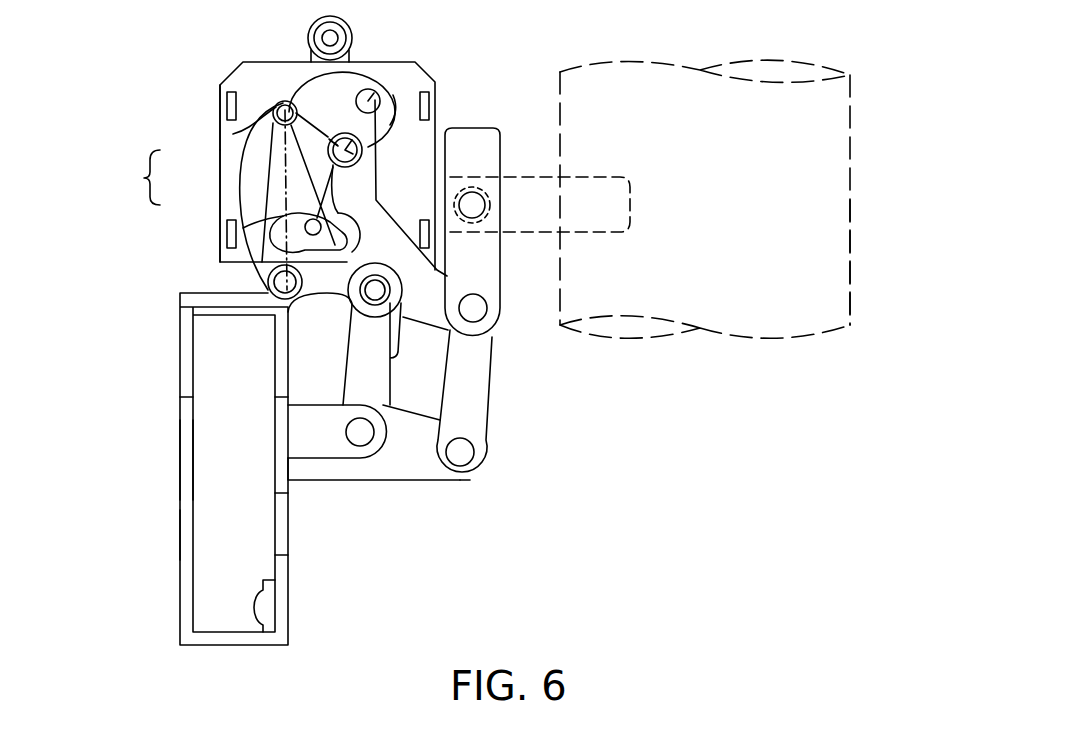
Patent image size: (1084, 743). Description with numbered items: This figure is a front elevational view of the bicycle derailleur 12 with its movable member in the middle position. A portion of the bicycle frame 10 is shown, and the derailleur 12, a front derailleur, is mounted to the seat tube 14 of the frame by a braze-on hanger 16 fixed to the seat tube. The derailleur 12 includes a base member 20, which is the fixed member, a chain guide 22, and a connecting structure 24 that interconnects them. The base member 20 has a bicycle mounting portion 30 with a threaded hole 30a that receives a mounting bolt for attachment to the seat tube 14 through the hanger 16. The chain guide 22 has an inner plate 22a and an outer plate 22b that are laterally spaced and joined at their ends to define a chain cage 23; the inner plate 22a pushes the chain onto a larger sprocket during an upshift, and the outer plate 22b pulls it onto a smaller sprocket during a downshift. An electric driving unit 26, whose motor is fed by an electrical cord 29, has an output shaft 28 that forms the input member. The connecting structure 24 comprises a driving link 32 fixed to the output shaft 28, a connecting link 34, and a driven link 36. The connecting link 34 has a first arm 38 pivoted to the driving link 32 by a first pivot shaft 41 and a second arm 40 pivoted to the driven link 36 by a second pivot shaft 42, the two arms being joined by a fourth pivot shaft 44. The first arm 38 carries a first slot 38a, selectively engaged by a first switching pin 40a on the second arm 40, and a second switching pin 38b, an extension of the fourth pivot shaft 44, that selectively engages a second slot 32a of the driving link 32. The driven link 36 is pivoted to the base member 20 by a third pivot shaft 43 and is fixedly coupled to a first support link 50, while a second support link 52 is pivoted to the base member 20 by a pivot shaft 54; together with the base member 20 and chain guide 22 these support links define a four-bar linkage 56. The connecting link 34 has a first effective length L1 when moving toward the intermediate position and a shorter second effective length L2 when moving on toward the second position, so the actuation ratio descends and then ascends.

The bicycle frame 10 is at (882, 80).
The bicycle derailleur 12 is at (186, 77).
The seat tube 14 is at (851, 277).
The braze-on hanger 16 is at (592, 176).
The base member 20 is at (400, 215).
The chain guide 22 is at (176, 417).
The inner plate 22a is at (288, 591).
The outer plate 22b is at (178, 530).
The chain cage 23 is at (176, 463).
The connecting structure 24 is at (142, 223).
The electric driving unit 26 is at (228, 69).
The output shaft 28 is at (345, 138).
The electrical cord 29 is at (309, 30).
The bicycle mounting portion 30 is at (470, 128).
The threaded hole 30a is at (470, 220).
The driving link 32 is at (437, 148).
The second slot 32a is at (233, 134).
The connecting link 34 is at (138, 177).
The driven link 36 is at (327, 302).
The first arm 38 is at (266, 154).
The first slot 38a is at (340, 222).
The second switching pin 38b is at (283, 102).
The second arm 40 is at (238, 186).
The first switching pin 40a is at (272, 233).
The first pivot shaft 41 is at (368, 89).
The second pivot shaft 42 is at (272, 295).
The third pivot shaft 43 is at (372, 334).
The fourth pivot shaft 44 is at (276, 105).
The first support link 50 is at (395, 385).
The second support link 52 is at (492, 402).
The pivot shaft 54 is at (483, 322).
The four-bar linkage 56 is at (518, 445).
The first effective length L1 is at (404, 96).
The second effective length L2 is at (283, 205).